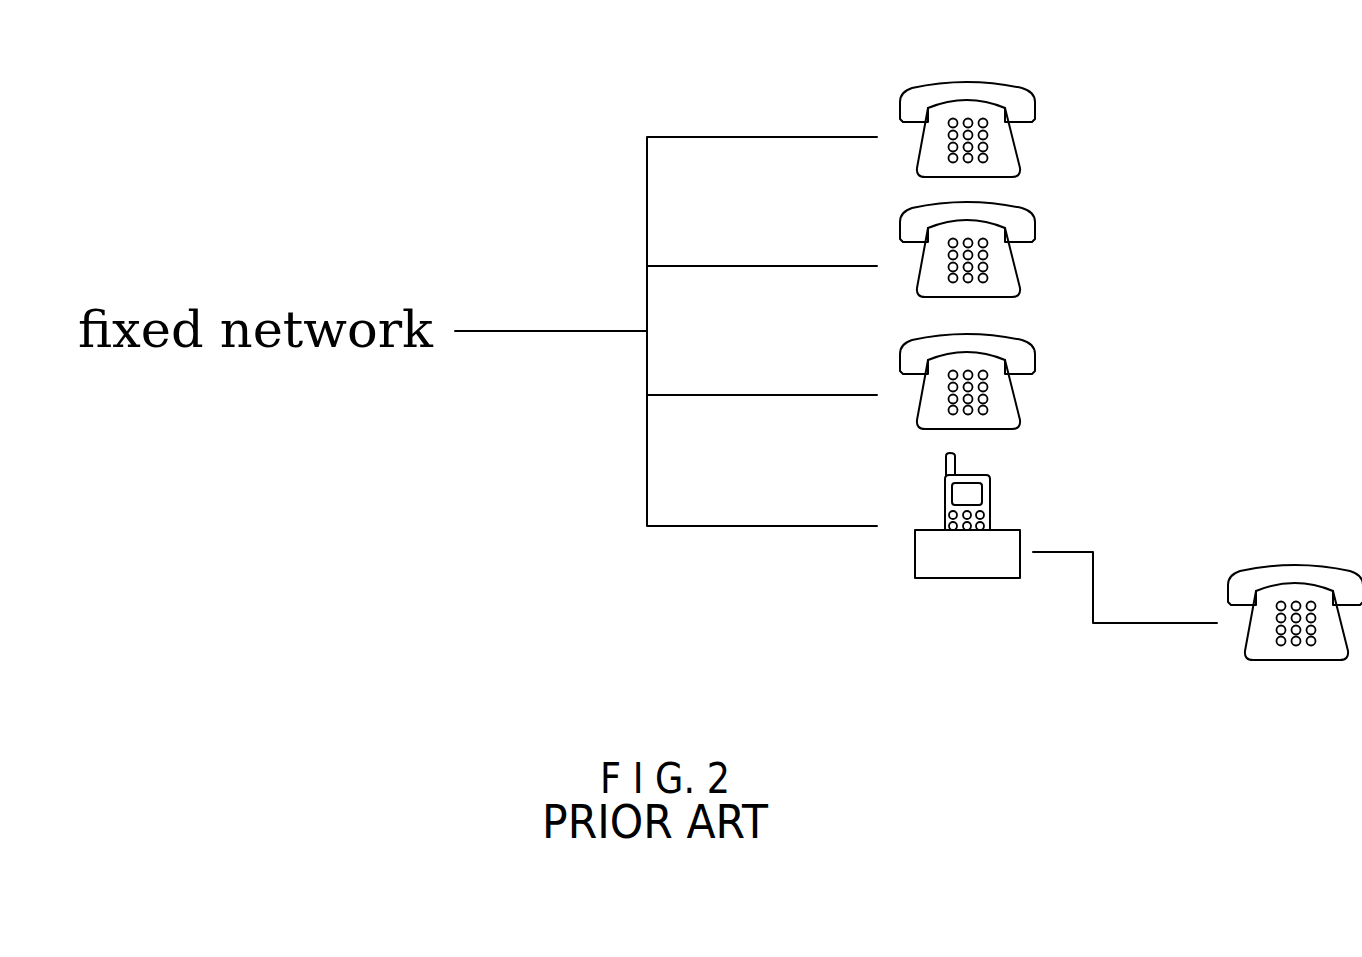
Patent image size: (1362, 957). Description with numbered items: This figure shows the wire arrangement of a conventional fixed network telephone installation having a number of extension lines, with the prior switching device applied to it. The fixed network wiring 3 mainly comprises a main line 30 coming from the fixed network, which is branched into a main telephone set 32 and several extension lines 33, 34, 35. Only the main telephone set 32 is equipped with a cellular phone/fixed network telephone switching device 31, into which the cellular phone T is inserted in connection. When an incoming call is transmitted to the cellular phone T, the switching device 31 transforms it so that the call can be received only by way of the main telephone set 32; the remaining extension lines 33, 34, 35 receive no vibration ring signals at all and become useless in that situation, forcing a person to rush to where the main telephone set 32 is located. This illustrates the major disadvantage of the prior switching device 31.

The main line 30 is at (532, 331).
The fixed network wiring 3 is at (668, 570).
The cellular phone/fixed network telephone switching device 31 is at (1020, 540).
The main telephone set 32 is at (1300, 565).
The extension line 33 is at (1020, 398).
The extension line 34 is at (1020, 268).
The extension line 35 is at (1018, 145).
The cellular phone T is at (990, 500).